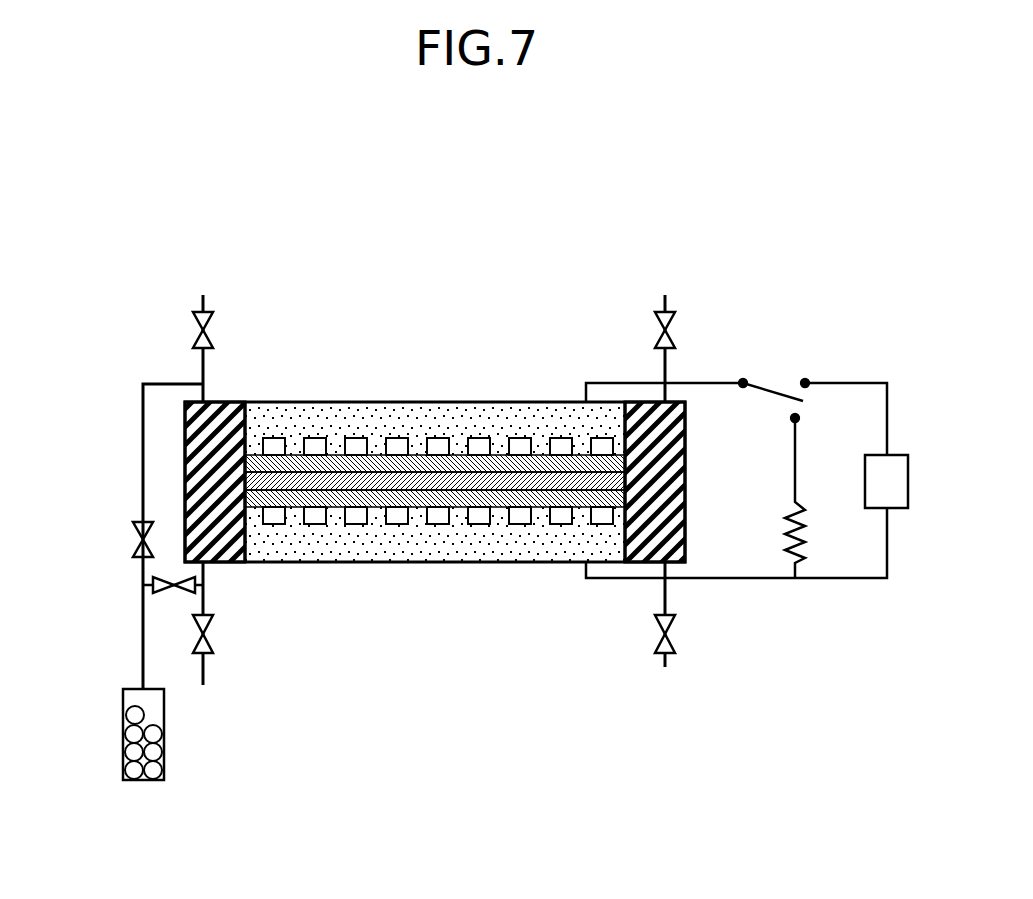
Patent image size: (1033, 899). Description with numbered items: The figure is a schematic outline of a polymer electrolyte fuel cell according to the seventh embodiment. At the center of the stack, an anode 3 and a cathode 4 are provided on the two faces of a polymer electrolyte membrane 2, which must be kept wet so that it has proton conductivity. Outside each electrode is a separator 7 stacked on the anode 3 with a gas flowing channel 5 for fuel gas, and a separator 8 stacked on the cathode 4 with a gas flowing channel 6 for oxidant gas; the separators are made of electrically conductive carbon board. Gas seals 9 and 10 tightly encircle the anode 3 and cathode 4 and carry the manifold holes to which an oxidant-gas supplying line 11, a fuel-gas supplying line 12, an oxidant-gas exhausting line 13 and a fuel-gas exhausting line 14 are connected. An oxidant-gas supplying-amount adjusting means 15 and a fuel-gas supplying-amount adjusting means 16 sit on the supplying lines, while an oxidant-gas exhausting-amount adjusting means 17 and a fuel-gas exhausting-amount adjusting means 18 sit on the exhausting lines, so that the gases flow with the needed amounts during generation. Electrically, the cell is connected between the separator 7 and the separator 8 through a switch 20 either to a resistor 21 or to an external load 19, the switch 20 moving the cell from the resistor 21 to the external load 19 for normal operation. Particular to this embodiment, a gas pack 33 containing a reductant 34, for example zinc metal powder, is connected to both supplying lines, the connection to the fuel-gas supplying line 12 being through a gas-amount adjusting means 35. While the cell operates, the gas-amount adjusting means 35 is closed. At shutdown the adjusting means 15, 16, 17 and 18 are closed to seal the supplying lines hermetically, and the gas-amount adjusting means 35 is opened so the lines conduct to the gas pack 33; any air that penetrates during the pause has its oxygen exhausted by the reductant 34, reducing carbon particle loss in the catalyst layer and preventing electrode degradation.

The polymer electrolyte membrane 2 is at (322, 485).
The anode 3 is at (318, 500).
The cathode 4 is at (365, 465).
The gas flowing channel 5 is at (352, 520).
The gas flowing channel 6 is at (430, 450).
The separator 7 is at (403, 538).
The separator 8 is at (463, 423).
The gas seal 9 is at (233, 402).
The gas seal 10 is at (626, 563).
The oxidant-gas supplying line 11 is at (202, 378).
The fuel-gas supplying line 12 is at (203, 585).
The oxidant-gas exhausting line 13 is at (662, 378).
The fuel-gas exhausting line 14 is at (665, 575).
The oxidant-gas supplying-amount adjusting means 15 is at (200, 322).
The fuel-gas supplying-amount adjusting means 16 is at (208, 640).
The oxidant-gas exhausting-amount adjusting means 17 is at (660, 322).
The fuel-gas exhausting-amount adjusting means 18 is at (670, 645).
The external load 19 is at (893, 503).
The switch 20 is at (790, 397).
The resistor 21 is at (800, 555).
The gas pack 33 is at (165, 705).
The reductant 34 is at (133, 713).
The gas-amount adjusting means 35 is at (150, 578).